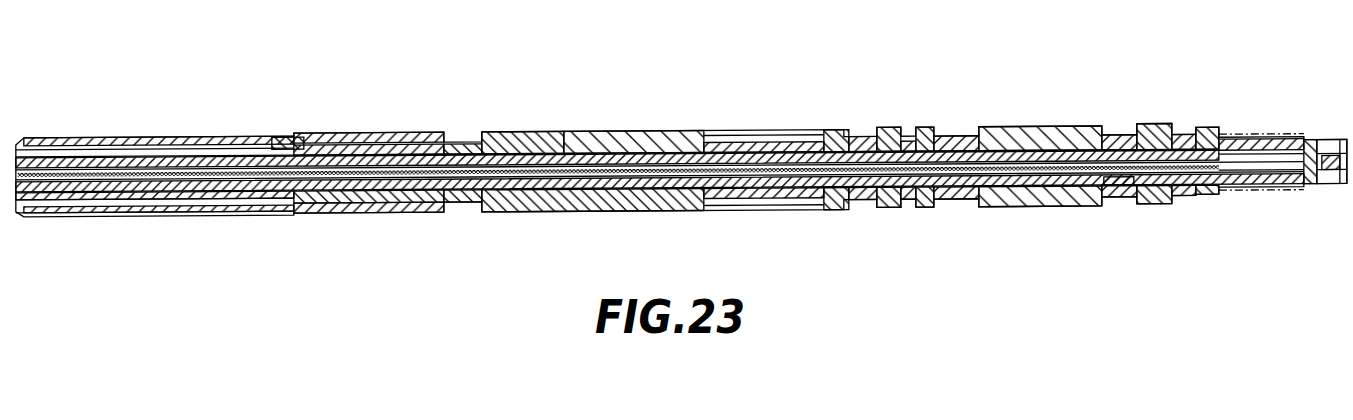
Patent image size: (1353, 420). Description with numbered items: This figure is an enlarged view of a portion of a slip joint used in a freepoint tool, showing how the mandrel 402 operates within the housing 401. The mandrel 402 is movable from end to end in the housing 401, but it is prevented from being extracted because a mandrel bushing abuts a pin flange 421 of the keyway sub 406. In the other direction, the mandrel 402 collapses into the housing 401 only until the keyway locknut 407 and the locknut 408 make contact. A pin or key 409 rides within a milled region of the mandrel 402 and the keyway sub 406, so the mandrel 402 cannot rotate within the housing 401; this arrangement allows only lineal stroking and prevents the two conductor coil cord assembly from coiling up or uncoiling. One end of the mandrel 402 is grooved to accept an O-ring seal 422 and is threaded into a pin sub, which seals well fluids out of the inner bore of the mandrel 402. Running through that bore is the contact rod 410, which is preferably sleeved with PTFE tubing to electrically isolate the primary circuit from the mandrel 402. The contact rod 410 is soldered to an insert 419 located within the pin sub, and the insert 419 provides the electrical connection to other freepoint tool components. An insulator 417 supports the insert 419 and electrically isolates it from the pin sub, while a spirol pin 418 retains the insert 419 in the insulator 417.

The housing 401 is at (159, 136).
The mandrel 402 is at (144, 198).
The keyway sub 406 is at (493, 136).
The keyway locknut 407 is at (826, 136).
The locknut 408 is at (920, 141).
The pin or key 409 is at (634, 150).
The contact rod 410 is at (554, 183).
The insulator 417 is at (1312, 150).
The spirol pin 418 is at (1327, 150).
The insert 419 is at (1332, 180).
The pin flange 421 is at (280, 141).
The O-ring seal 422 is at (1112, 190).